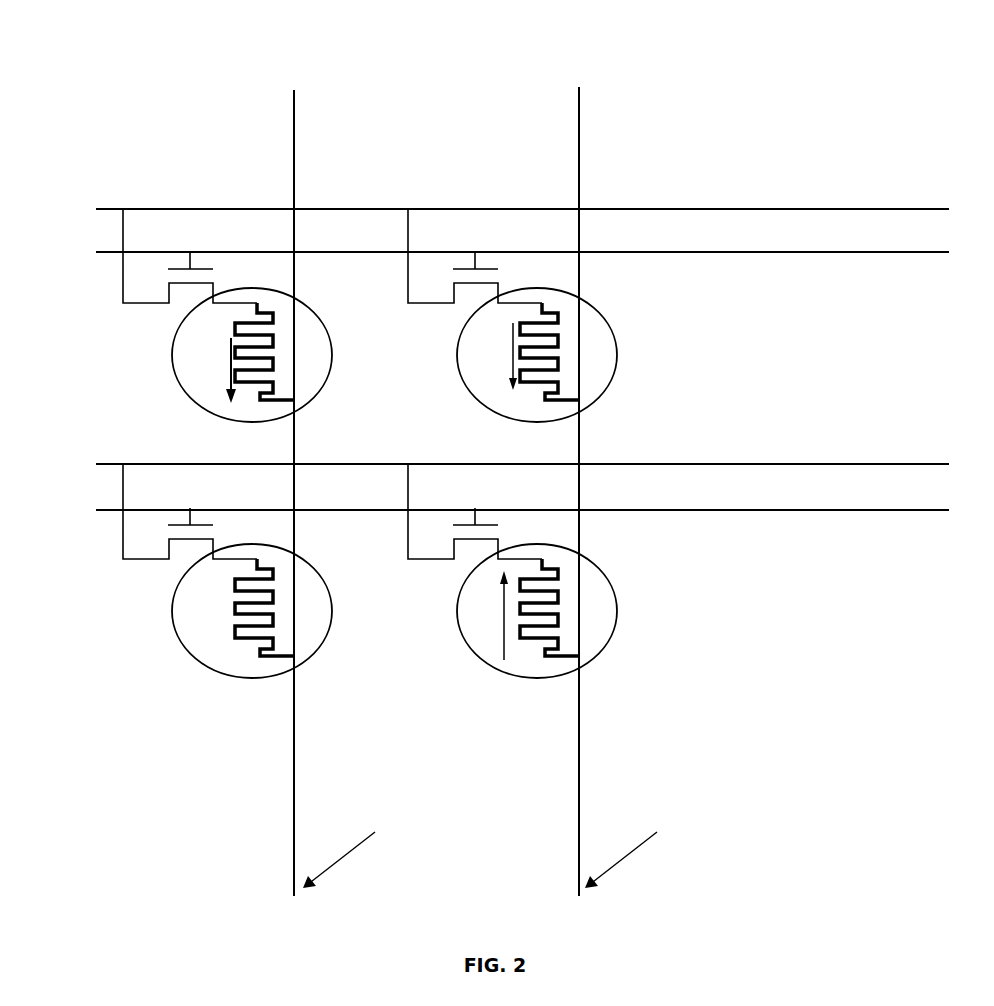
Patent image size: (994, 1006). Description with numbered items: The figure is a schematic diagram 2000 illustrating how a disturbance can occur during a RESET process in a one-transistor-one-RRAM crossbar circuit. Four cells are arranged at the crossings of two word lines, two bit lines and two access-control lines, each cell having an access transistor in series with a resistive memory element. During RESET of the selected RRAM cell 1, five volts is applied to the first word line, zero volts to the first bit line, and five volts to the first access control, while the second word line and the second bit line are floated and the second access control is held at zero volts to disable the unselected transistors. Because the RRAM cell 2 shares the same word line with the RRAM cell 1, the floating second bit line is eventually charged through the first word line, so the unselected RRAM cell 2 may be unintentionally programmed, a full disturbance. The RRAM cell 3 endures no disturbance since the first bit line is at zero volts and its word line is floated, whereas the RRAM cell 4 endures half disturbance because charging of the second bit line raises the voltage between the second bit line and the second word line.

The schematic diagram 2000 is at (522, 32).
The RRAM cell 1 is at (227, 315).
The RRAM cell 2 is at (512, 315).
The RRAM cell 3 is at (130, 708).
The RRAM cell 4 is at (512, 571).